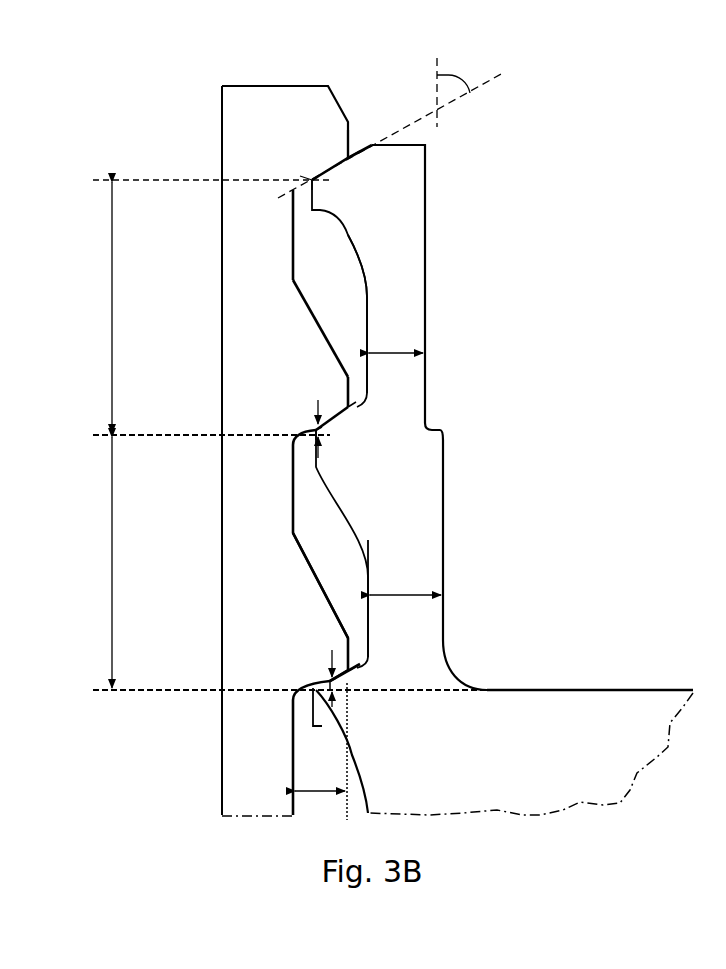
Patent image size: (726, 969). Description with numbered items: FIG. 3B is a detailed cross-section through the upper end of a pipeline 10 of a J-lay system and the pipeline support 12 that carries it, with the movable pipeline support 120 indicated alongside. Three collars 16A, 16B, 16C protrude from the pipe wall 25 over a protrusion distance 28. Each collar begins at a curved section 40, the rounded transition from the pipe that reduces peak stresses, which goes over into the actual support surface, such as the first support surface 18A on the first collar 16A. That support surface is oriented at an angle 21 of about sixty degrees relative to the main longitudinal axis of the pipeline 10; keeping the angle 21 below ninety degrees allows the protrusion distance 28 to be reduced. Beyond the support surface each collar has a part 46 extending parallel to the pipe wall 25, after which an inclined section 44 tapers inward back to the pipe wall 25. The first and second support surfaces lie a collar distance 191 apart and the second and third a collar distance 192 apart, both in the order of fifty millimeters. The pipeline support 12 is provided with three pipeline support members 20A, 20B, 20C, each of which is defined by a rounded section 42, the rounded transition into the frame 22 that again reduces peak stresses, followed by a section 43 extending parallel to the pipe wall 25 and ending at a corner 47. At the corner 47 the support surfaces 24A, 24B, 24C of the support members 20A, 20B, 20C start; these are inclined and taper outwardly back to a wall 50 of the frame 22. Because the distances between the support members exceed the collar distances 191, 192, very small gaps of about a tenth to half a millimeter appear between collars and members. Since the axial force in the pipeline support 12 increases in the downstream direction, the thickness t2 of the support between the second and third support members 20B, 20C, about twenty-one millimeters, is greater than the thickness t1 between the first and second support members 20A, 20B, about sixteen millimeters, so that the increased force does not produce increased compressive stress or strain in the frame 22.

The pipeline 10 is at (237, 773).
The pipeline support 12 is at (426, 268).
The first collar 16A is at (330, 127).
The second collar 16B is at (325, 387).
The third collar 16C is at (322, 642).
The first support surface 18A is at (337, 160).
The first pipeline support member 20A is at (348, 187).
The second pipeline support member 20B is at (330, 460).
The third pipeline support member 20C is at (343, 708).
The angle 21 is at (460, 75).
The frame 22 is at (425, 495).
The first support surface of support member 24A is at (405, 165).
The second support surface of support member 24B is at (345, 420).
The third support surface of support member 24C is at (343, 728).
The pipe wall 25 is at (293, 268).
The protrusion distance 28 is at (317, 793).
The curved section 40 is at (291, 181).
The rounded section 42 is at (320, 622).
The parallel section of support member 43 is at (312, 181).
The inclined section 44 is at (310, 318).
The parallel part of collar 46 is at (350, 140).
The corner 47 is at (347, 160).
The frame wall 50 is at (365, 328).
The movable pipeline support 120 is at (618, 257).
The first collar distance 191 is at (112, 348).
The second collar distance 192 is at (112, 580).
The first thickness t1 is at (395, 352).
The second thickness t2 is at (413, 594).